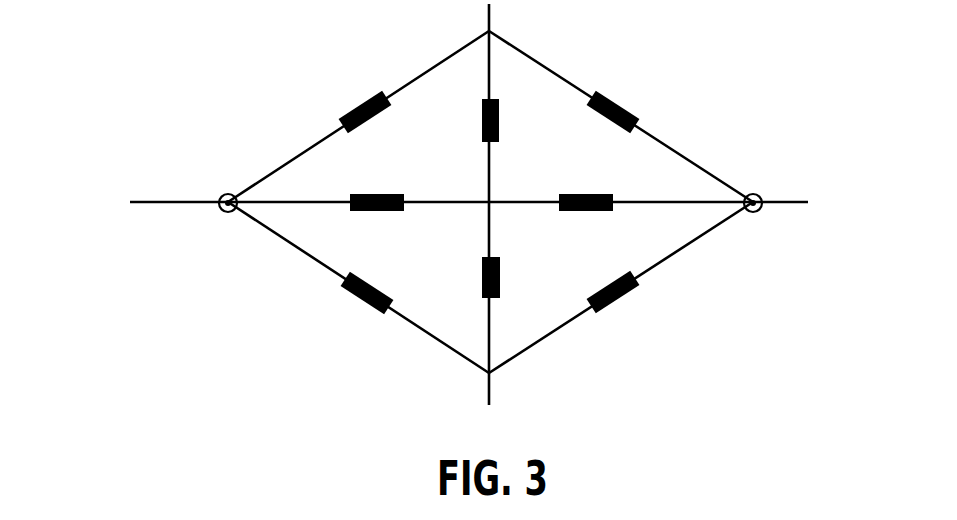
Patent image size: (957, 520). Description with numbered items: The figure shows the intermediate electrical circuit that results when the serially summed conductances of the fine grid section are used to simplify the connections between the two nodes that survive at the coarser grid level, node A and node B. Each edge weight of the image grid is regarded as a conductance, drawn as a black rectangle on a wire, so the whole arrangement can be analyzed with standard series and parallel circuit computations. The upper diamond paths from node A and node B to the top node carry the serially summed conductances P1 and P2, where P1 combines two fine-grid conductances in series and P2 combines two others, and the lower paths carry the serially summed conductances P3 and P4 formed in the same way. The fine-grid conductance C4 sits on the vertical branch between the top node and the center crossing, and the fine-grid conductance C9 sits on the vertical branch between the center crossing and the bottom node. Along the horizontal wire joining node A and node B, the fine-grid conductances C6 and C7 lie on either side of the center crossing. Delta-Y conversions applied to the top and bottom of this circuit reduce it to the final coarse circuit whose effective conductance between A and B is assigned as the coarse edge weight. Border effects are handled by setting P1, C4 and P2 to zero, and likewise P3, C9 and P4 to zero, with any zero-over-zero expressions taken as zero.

The node A is at (216, 189).
The node B is at (767, 188).
The serially summed conductance p1 P1 is at (359, 99).
The serially summed conductance p2 P2 is at (618, 98).
The serially summed conductance p3 P3 is at (360, 308).
The serially summed conductance p4 P4 is at (618, 306).
The edge weight conductance c4 C4 is at (470, 117).
The edge weight conductance c6 C6 is at (377, 182).
The edge weight conductance c7 C7 is at (586, 180).
The edge weight conductance c9 C9 is at (470, 274).